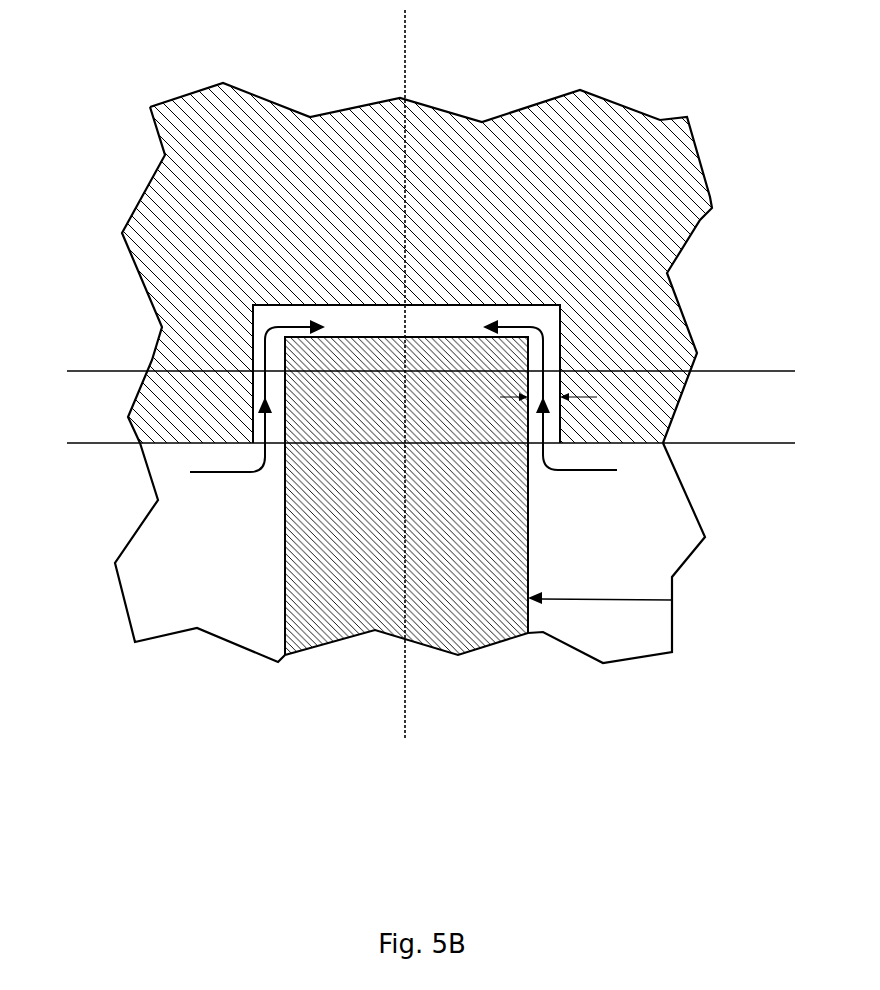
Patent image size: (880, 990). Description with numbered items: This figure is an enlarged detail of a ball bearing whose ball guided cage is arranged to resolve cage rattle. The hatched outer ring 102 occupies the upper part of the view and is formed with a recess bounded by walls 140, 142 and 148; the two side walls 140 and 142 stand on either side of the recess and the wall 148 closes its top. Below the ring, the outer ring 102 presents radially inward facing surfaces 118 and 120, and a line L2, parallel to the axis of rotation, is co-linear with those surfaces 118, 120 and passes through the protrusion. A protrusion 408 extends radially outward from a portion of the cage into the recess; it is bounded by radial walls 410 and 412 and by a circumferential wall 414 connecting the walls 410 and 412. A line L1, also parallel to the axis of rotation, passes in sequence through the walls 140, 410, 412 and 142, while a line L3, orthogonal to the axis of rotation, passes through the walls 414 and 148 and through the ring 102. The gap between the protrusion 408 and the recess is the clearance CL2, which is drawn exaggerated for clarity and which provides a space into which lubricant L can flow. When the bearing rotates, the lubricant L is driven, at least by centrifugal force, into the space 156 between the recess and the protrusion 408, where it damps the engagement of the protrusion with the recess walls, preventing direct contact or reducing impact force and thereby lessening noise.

The outer ring 102 is at (622, 99).
The surface 118 is at (173, 445).
The surface 120 is at (585, 472).
The wall 140 is at (253, 313).
The wall 142 is at (562, 348).
The wall 148 is at (387, 305).
The space 156 is at (430, 320).
The protrusion 408 is at (672, 600).
The radial wall 410 is at (268, 348).
The radial wall 412 is at (528, 422).
The circumferential wall 414 is at (348, 337).
The lubricant L is at (227, 473).
The line L1 is at (88, 372).
The line L2 is at (88, 444).
The line L3 is at (403, 55).
The clearance CL2 is at (583, 397).